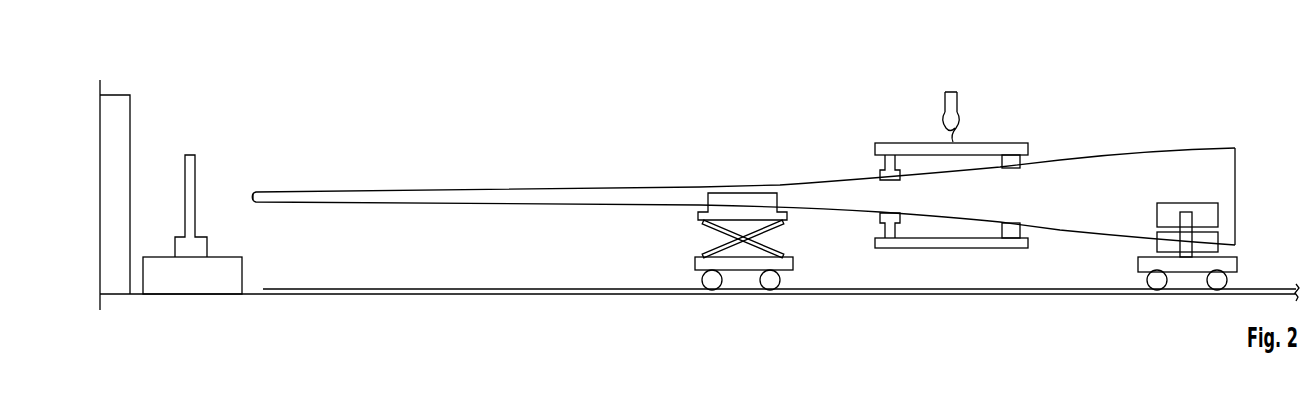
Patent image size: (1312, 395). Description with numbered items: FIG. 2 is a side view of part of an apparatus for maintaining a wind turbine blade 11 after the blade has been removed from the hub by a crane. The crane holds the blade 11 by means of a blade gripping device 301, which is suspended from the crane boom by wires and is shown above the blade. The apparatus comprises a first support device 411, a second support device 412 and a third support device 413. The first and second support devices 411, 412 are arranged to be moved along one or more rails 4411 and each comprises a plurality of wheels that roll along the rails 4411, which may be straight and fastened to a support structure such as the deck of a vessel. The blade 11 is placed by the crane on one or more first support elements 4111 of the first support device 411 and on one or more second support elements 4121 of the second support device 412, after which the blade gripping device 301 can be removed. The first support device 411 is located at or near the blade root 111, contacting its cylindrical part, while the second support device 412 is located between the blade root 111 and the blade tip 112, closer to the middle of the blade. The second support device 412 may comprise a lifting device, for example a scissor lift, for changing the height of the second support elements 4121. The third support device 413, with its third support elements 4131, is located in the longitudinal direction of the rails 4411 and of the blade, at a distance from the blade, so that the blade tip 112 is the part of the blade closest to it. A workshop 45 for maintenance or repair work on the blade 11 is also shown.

The blade 11 is at (822, 181).
The blade root 111 is at (1237, 182).
The blade tip 112 is at (251, 202).
The blade gripping device 301 is at (907, 143).
The first support device 411 is at (1240, 265).
The first support elements 4111 is at (1220, 237).
The second support device 412 is at (693, 266).
The second support elements 4121 is at (700, 213).
The third support device 413 is at (243, 264).
The third support elements 4131 is at (216, 189).
The rails 4411 is at (540, 289).
The workshop 45 is at (131, 158).